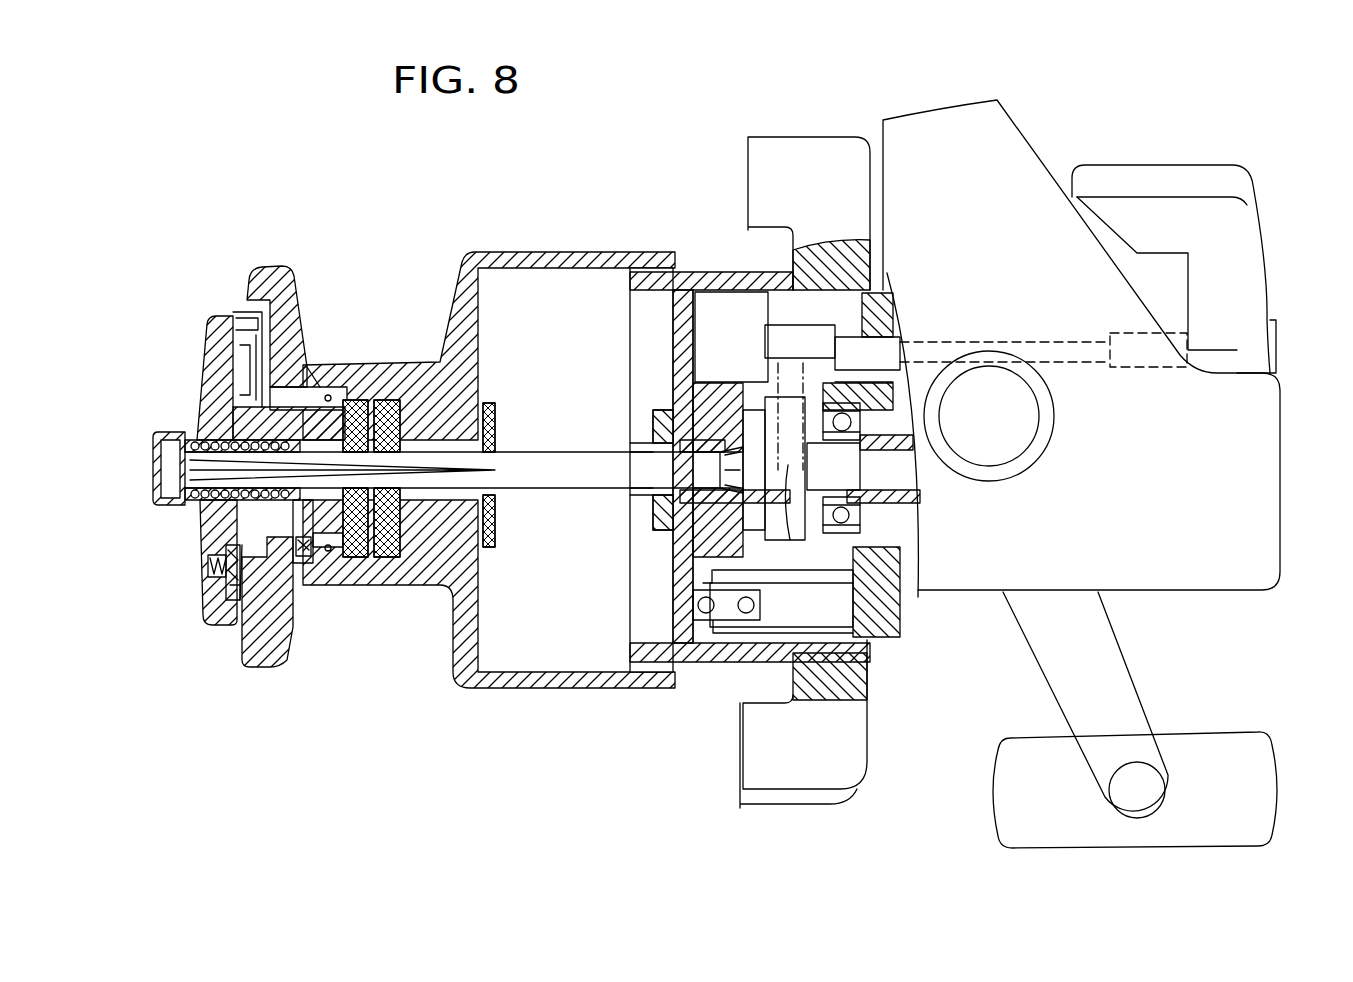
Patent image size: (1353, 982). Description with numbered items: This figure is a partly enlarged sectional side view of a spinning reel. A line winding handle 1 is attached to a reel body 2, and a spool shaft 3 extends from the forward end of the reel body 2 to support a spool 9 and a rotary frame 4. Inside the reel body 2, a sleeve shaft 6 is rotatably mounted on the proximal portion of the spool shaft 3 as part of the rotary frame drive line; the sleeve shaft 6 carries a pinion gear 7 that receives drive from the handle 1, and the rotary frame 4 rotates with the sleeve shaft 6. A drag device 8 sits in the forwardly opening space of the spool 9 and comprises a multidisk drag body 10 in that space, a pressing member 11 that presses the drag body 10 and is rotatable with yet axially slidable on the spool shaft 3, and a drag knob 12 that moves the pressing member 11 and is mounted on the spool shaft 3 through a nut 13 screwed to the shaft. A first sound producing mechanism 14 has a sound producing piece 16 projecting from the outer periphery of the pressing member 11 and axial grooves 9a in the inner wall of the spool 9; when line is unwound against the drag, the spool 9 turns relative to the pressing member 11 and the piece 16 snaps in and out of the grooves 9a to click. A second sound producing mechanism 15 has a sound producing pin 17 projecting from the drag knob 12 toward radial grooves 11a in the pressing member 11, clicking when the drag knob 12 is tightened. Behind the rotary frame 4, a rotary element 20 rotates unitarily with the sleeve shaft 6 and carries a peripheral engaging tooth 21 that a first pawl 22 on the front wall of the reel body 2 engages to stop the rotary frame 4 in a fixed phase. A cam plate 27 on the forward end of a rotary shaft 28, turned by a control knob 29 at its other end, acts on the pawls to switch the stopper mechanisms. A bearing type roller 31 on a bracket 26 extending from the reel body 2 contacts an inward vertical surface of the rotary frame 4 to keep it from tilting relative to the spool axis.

The line winding handle 1 is at (1133, 717).
The reel body 2 is at (1198, 572).
The spool shaft 3 is at (553, 468).
The rotary frame 4 is at (858, 758).
The sleeve shaft 6 is at (697, 427).
The pinion gear 7 is at (912, 540).
The drag device 8 is at (362, 385).
The spool 9 is at (423, 360).
The grooves 9a is at (278, 663).
The multidisk drag body 10 is at (403, 567).
The pressing member 11 is at (307, 365).
The radial grooves 11a is at (205, 357).
The drag knob 12 is at (172, 430).
The nut 13 is at (207, 513).
The first sound producing mechanism 14 is at (317, 573).
The second sound producing mechanism 15 is at (233, 620).
The sound producing piece 16 is at (300, 597).
The sound producing pin 17 is at (208, 598).
The rotary element 20 is at (780, 390).
The engaging tooth 21 is at (800, 520).
The first pawl 22 is at (763, 360).
The bracket 26 is at (867, 673).
The cam plate 27 is at (790, 333).
The rotary shaft 28 is at (903, 337).
The control knob 29 is at (1180, 165).
The roller 31 is at (712, 585).